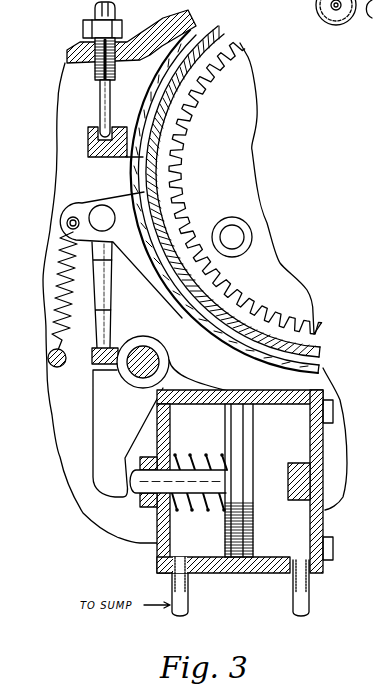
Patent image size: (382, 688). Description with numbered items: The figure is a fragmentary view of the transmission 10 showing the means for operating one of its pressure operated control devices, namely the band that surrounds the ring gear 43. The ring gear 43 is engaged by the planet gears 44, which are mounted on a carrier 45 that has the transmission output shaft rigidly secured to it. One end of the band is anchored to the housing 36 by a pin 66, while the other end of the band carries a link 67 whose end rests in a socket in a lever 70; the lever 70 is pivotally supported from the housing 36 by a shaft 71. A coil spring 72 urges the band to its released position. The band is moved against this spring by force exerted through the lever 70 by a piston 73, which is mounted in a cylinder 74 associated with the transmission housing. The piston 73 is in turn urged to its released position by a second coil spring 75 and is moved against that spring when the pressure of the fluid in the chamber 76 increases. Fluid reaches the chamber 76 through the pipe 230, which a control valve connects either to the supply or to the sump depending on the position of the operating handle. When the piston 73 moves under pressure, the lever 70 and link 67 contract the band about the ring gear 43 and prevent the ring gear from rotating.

The transmission unit 10 is at (349, 22).
The housing 36 is at (163, 25).
The ring gear 43 is at (236, 40).
The planet gears 44 is at (199, 250).
The carrier 45 is at (240, 80).
The pin 66 is at (104, 106).
The link 67 is at (112, 290).
The lever 70 is at (117, 397).
The shaft 71 is at (150, 354).
The coil spring 72 is at (63, 312).
The piston 73 is at (253, 520).
The cylinder 74 is at (262, 563).
The coil spring 75 is at (193, 452).
The chamber 76 is at (298, 437).
The pipe 230 is at (305, 598).